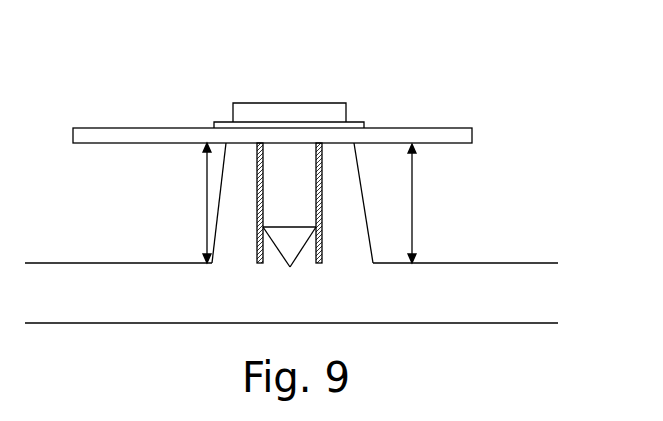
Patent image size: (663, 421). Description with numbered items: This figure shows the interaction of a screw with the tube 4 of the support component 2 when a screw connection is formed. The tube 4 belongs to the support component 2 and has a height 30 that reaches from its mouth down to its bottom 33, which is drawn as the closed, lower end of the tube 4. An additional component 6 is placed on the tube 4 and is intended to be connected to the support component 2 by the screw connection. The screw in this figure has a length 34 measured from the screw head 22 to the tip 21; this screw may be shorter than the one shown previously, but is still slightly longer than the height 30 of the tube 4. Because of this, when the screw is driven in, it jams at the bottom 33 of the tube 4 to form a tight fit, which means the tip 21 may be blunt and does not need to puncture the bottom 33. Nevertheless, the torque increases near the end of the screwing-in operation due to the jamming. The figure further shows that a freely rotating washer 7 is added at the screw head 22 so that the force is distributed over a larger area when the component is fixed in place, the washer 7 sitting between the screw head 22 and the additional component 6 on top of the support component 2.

The support component 2 is at (515, 288).
The tube 4 is at (224, 166).
The additional component 6 is at (462, 126).
The freely rotating washer 7 is at (358, 121).
The tip 21 is at (266, 259).
The screw head 22 is at (290, 102).
The height 30 is at (436, 203).
The bottom 33 is at (323, 263).
The length 34 is at (191, 203).